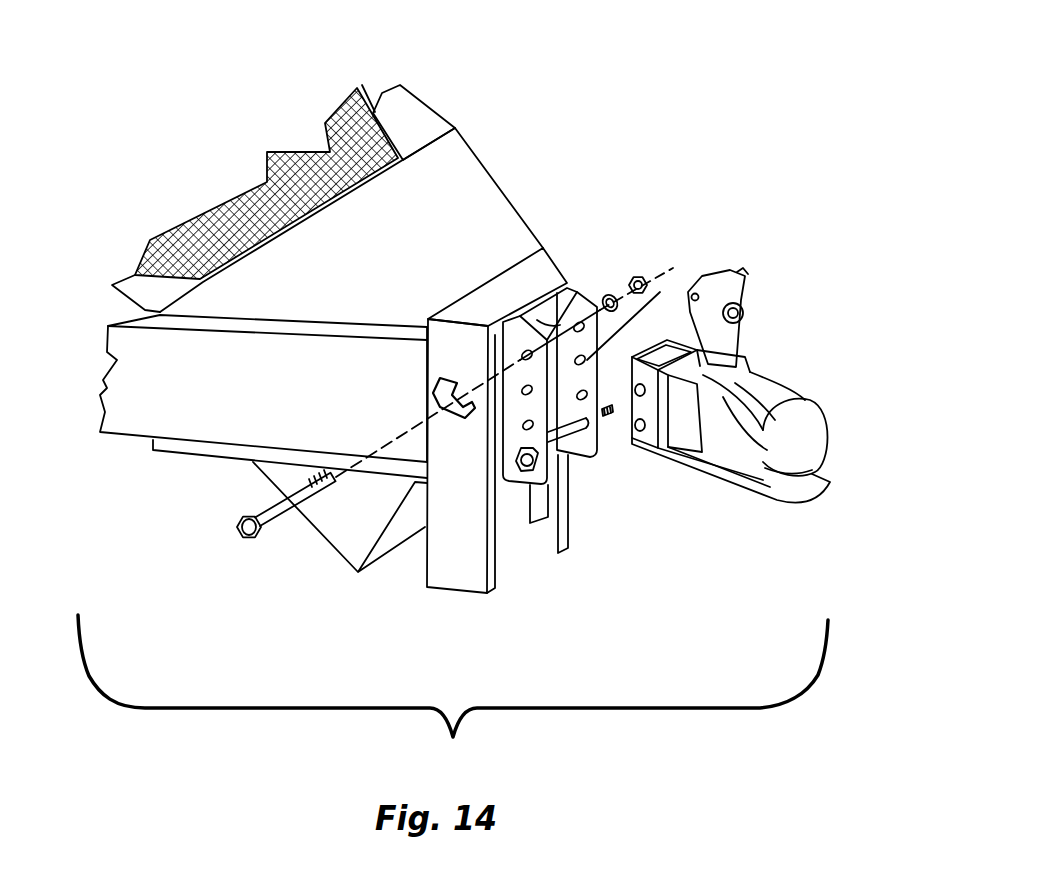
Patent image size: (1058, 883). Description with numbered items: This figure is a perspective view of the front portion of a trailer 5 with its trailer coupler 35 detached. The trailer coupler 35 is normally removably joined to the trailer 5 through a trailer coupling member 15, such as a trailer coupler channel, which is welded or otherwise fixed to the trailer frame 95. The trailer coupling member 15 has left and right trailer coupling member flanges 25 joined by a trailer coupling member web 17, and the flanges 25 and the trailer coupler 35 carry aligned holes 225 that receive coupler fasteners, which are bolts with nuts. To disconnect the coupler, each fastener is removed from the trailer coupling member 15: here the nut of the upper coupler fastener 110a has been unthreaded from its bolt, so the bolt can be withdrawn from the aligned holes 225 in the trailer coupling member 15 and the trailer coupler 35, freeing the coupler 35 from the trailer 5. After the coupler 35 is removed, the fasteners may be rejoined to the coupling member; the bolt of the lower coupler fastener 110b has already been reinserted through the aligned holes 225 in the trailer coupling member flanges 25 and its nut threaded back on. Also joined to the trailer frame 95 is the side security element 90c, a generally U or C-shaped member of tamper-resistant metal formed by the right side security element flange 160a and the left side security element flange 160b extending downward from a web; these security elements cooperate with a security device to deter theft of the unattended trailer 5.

The trailer 5 is at (462, 68).
The trailer frame 95 is at (412, 120).
The side security element 90c is at (443, 585).
The right side security element flange 160a is at (475, 575).
The left side security element flange 160b is at (570, 543).
The trailer coupling member 15 is at (578, 297).
The trailer coupling member web 17 is at (590, 297).
The aligned holes 225 is at (660, 292).
The trailer coupling member flanges 25 is at (593, 453).
The trailer coupler 35 is at (765, 403).
The upper coupler fastener 110a is at (282, 515).
The lower coupler fastener 110b is at (528, 483).